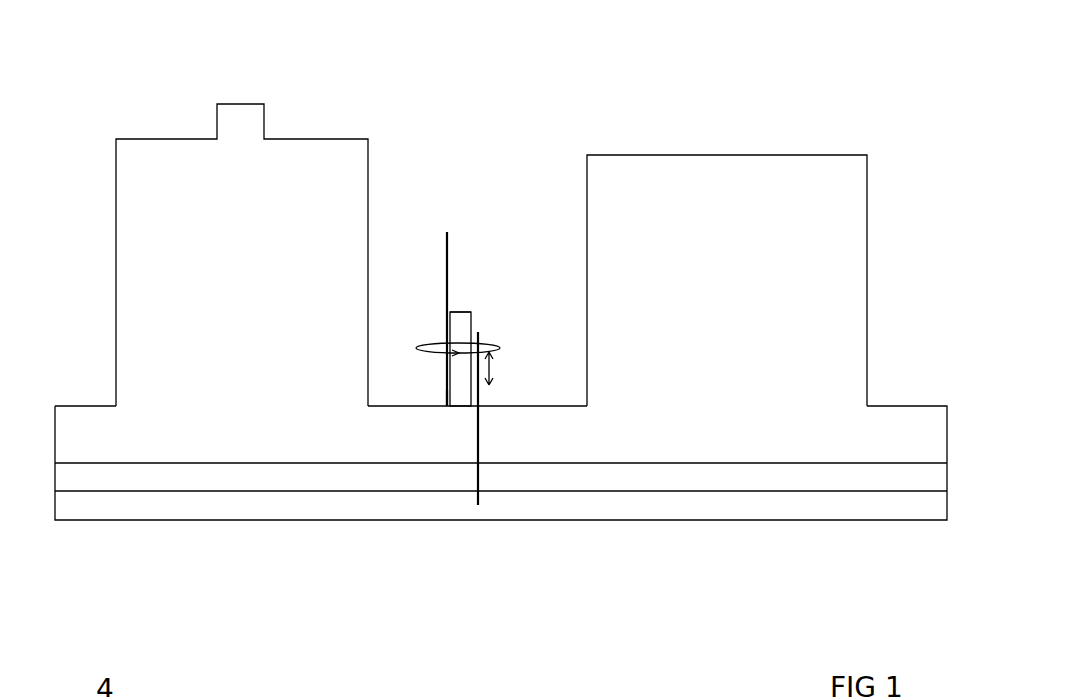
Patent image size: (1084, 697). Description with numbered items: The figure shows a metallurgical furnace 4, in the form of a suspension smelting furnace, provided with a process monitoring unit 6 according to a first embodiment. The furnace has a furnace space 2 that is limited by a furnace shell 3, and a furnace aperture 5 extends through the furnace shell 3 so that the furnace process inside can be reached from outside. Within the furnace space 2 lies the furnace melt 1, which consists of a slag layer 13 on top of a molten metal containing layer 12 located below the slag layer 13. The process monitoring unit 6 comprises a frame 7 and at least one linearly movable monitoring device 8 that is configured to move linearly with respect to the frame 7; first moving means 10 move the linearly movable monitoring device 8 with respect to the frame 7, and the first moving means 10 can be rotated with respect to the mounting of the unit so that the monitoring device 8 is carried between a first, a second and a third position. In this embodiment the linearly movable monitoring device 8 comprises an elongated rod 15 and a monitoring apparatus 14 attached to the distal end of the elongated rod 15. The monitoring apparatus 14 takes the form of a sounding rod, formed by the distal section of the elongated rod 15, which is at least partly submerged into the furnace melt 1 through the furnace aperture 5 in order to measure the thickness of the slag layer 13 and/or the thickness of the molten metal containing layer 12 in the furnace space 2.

The furnace melt 1 is at (501, 568).
The furnace space 2 is at (712, 445).
The furnace shell 3 is at (867, 268).
The metallurgical furnace 4 is at (143, 93).
The furnace aperture 5 is at (480, 403).
The process monitoring unit 6 is at (478, 320).
The frame 7 is at (467, 320).
The linearly movable monitoring device 8 is at (413, 290).
The first moving means 10 is at (450, 312).
The molten metal containing layer 12 is at (787, 508).
The slag layer 13 is at (748, 485).
The monitoring apparatus 14 is at (447, 398).
The elongated rod 15 is at (445, 327).